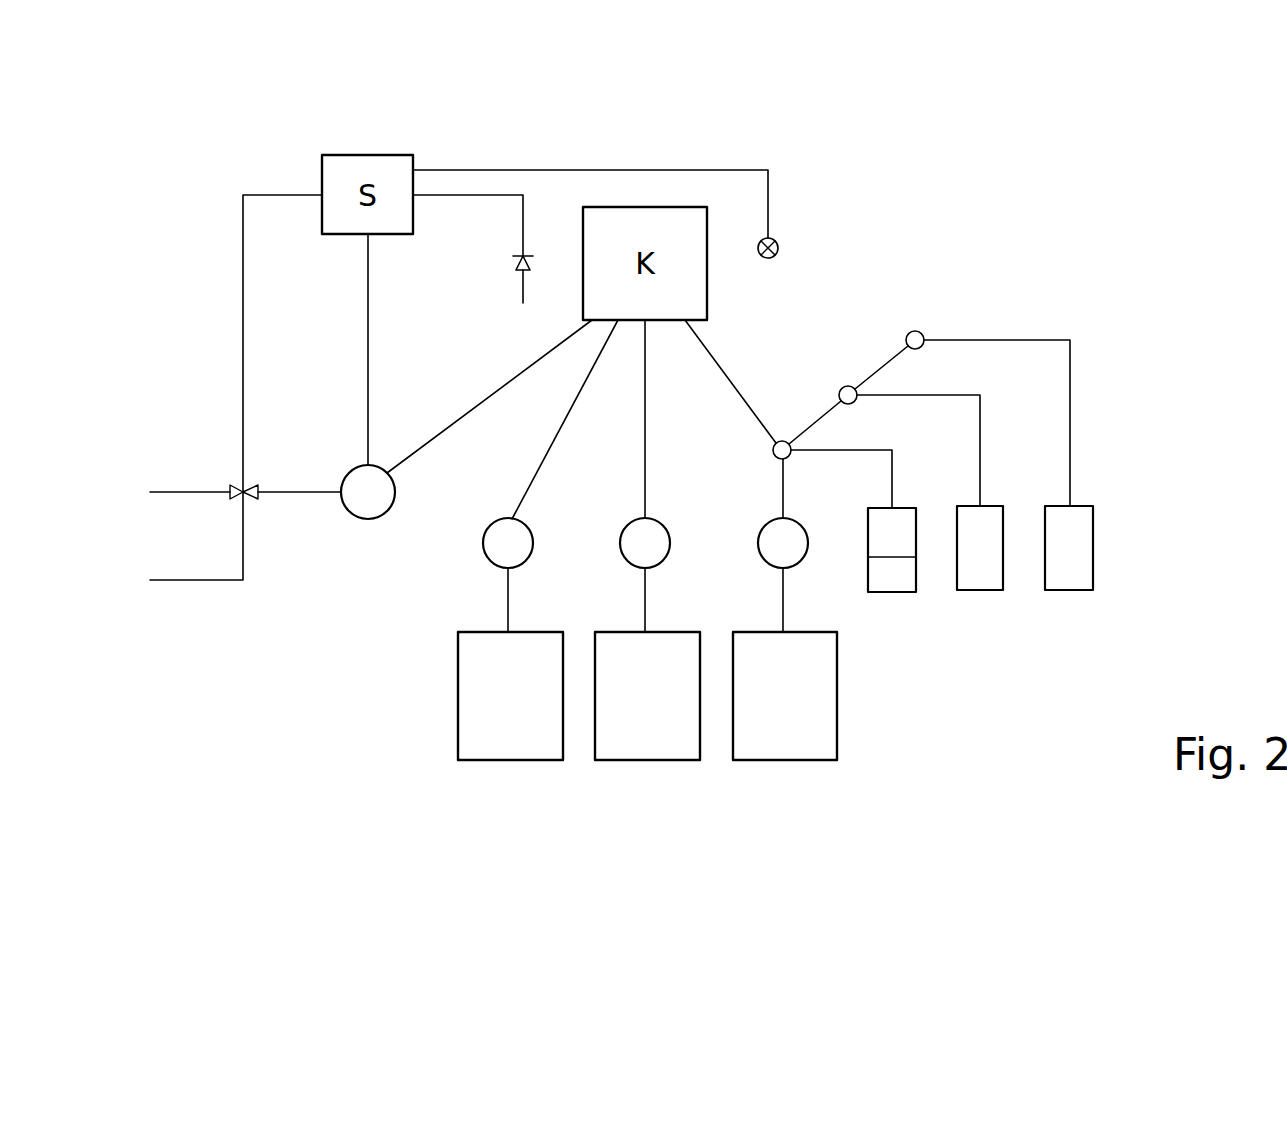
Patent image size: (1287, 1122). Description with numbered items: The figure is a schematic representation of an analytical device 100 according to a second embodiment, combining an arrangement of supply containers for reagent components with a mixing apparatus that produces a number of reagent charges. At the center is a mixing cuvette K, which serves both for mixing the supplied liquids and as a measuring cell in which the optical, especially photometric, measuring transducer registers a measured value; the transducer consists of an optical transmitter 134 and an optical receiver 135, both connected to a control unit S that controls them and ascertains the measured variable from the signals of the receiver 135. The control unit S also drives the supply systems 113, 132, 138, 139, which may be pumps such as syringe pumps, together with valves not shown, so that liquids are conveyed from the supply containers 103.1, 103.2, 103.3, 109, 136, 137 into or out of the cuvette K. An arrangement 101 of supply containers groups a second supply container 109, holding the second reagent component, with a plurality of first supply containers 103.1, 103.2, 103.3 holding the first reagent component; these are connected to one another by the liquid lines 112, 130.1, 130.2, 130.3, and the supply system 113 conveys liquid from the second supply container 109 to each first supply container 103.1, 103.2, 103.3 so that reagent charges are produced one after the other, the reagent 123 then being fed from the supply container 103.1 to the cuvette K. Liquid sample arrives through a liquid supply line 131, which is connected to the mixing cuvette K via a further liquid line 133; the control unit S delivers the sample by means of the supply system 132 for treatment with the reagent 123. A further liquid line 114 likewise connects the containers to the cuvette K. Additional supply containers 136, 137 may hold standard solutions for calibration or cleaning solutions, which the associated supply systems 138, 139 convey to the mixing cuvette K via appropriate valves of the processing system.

The analytical device 100 is at (1045, 292).
The arrangement of supply containers 101 is at (955, 722).
The first supply container 103.1 is at (900, 593).
The first supply container 103.2 is at (985, 577).
The first supply container 103.3 is at (1077, 577).
The second supply container 109 is at (785, 664).
The liquid line 112 is at (875, 372).
The supply system 113 is at (768, 526).
The liquid line 114 is at (735, 378).
The reagent 123 is at (883, 577).
The liquid line 130.1 is at (892, 470).
The liquid line 130.2 is at (980, 470).
The liquid line 130.3 is at (1070, 470).
The liquid supply line 131 is at (197, 582).
The supply system 132 is at (370, 512).
The liquid line 133 is at (478, 410).
The optical transmitter 134 is at (779, 248).
The optical receiver 135 is at (514, 263).
The supply container 136 is at (510, 664).
The supply container 137 is at (647, 664).
The supply system 138 is at (527, 538).
The supply system 139 is at (664, 538).